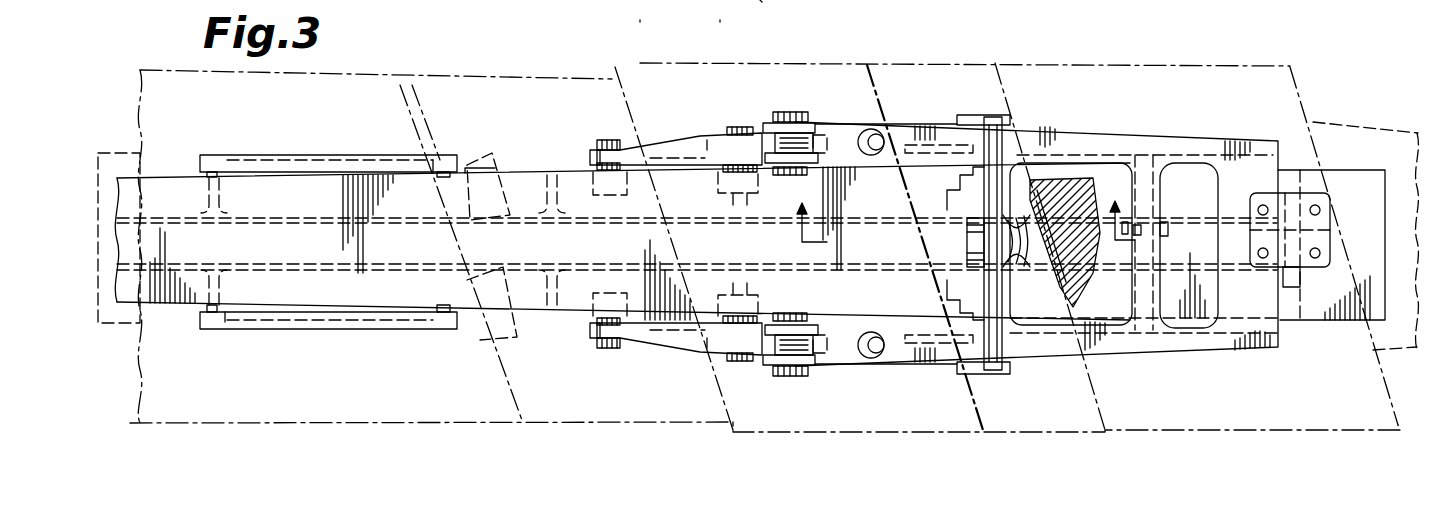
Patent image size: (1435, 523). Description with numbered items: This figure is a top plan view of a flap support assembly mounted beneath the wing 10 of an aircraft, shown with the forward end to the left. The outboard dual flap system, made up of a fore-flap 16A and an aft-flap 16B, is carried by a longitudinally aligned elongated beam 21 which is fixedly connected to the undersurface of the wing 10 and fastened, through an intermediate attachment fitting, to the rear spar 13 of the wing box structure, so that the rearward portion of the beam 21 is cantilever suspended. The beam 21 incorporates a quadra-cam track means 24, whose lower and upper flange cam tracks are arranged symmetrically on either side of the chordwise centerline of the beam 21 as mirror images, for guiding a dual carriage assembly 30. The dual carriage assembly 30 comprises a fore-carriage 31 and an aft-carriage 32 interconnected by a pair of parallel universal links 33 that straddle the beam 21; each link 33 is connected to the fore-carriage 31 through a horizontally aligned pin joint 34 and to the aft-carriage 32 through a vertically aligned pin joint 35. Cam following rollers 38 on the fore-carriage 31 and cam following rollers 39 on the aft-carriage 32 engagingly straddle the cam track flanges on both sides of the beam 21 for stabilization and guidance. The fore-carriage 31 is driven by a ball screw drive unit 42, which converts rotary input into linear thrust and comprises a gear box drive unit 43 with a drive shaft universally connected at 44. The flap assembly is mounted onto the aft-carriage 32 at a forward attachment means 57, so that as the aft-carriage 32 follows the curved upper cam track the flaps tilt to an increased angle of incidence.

The wing 10 is at (388, 72).
The rear spar 13 is at (537, 167).
The fore-flap 16A is at (640, 63).
The aft-flap 16B is at (1193, 72).
The beam 21 is at (330, 173).
The quadra-cam track means 24 is at (1340, 160).
The dual carriage assembly 30 is at (1215, 360).
The fore-carriage 31 is at (670, 137).
The aft-carriage 32 is at (927, 120).
The universal links 33 is at (817, 120).
The horizontally aligned pin joint 34 is at (790, 110).
The vertically aligned pin joint 35 is at (862, 128).
The cam following rollers 38 is at (607, 352).
The cam following rollers 39 is at (1003, 115).
The ball screw drive unit 42 is at (758, 2).
The gear box drive unit 43 is at (648, 12).
The universal connection 44 is at (728, 12).
The forward attachment means 57 is at (955, 242).